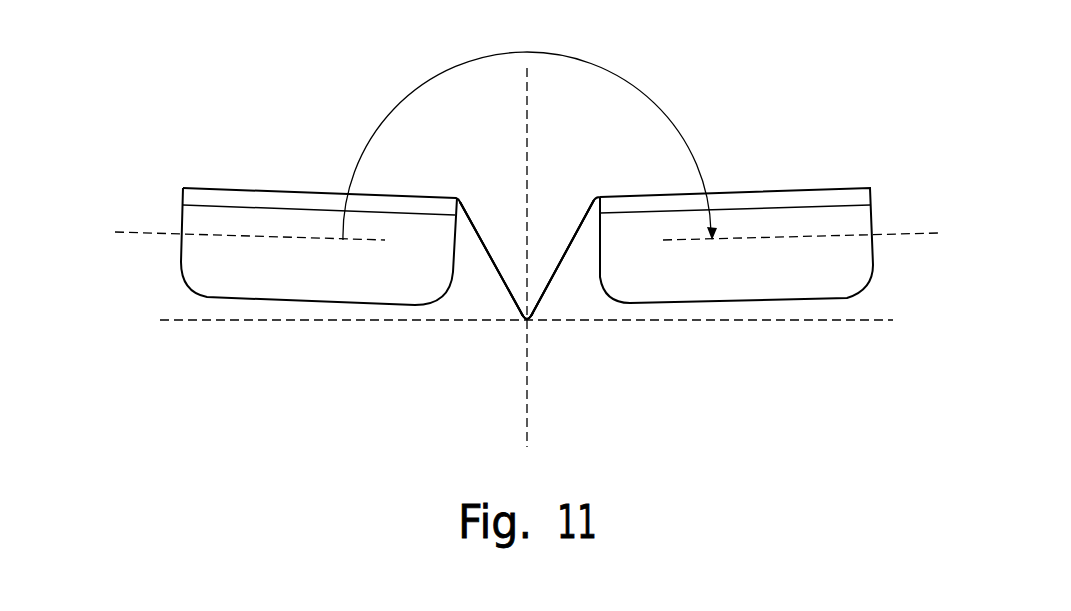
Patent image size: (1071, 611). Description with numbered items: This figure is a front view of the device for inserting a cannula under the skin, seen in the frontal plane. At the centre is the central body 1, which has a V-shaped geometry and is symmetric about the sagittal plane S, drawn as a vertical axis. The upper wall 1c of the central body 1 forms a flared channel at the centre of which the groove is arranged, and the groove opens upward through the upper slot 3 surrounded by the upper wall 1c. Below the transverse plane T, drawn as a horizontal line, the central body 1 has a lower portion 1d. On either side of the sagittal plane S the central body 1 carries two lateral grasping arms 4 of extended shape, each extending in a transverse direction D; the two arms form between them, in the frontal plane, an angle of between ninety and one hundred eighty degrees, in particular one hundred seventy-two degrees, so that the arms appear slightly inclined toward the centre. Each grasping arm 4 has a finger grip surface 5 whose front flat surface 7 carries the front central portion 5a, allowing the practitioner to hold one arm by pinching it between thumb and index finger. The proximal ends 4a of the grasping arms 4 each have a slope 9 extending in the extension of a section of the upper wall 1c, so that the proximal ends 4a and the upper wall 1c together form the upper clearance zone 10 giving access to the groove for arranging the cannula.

The central body 1 is at (556, 289).
The upper wall 1c is at (549, 291).
The lower portion 1d is at (522, 324).
The upper slot 3 is at (528, 318).
The lateral grasping arm 4 is at (208, 213).
The proximal end of grasping arm 4a is at (485, 222).
The slope 9 is at (480, 236).
The clearance zone 10 is at (551, 178).
The finger grip surface 5 is at (509, 289).
The front central portion 5a is at (509, 289).
The front flat surface 7 is at (237, 288).
The transverse direction D is at (120, 232).
The transverse plane T is at (880, 322).
The sagittal plane S is at (527, 408).